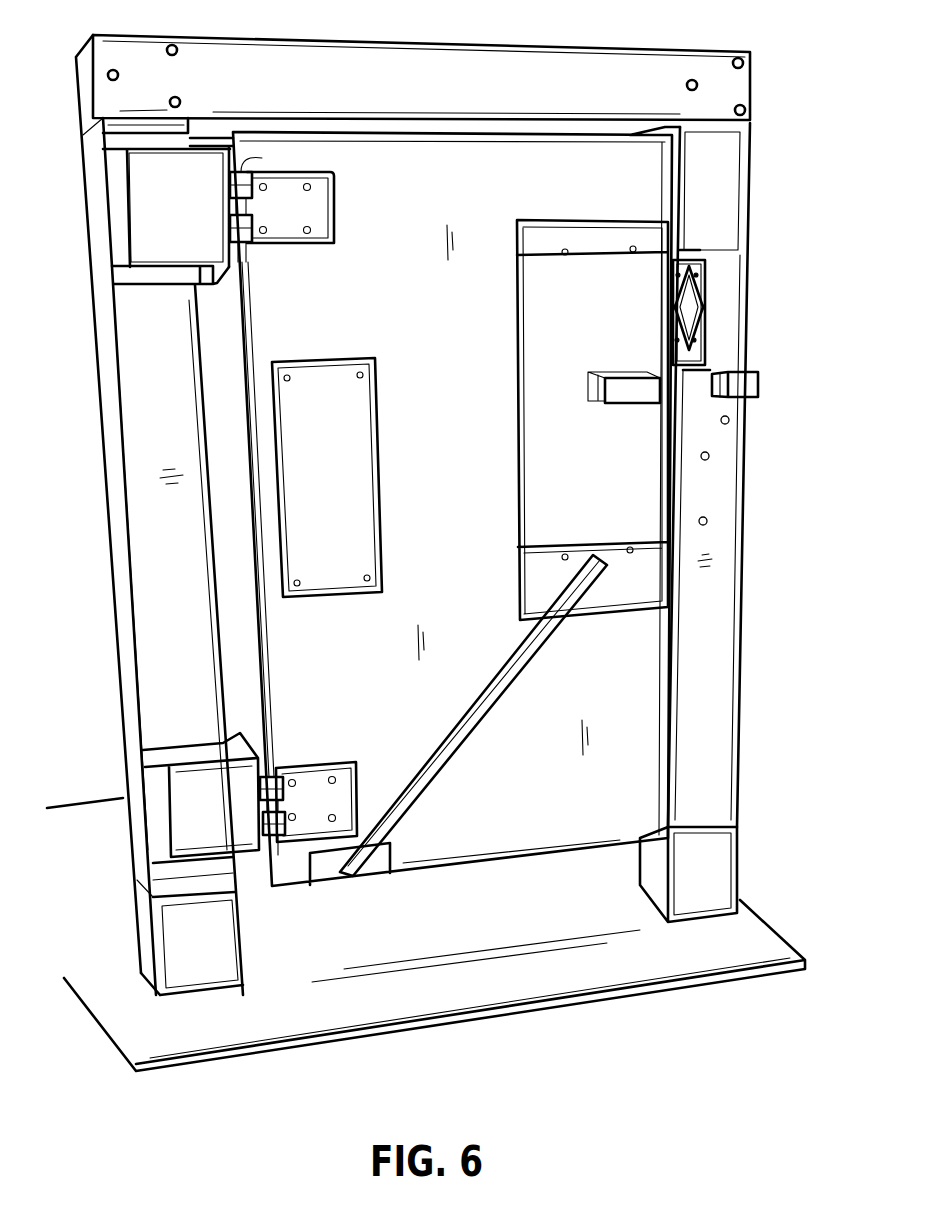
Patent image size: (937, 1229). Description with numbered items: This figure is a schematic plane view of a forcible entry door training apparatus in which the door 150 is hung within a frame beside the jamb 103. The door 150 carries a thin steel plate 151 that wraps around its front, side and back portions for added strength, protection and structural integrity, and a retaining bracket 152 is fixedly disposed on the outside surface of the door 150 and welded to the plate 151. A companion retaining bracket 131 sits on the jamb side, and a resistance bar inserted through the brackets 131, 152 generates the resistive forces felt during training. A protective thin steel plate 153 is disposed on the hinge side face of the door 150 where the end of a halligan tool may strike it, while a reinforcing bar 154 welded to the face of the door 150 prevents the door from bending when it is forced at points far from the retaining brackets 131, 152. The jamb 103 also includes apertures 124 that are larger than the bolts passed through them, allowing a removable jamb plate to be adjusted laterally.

The jamb 103 is at (720, 663).
The apertures 124 is at (707, 521).
The retaining bracket 131 is at (743, 382).
The door 150 is at (500, 860).
The thin steel plate 151 is at (627, 598).
The retaining bracket 152 is at (627, 382).
The protective thin steel plate 153 is at (357, 483).
The reinforcing bar 154 is at (475, 735).